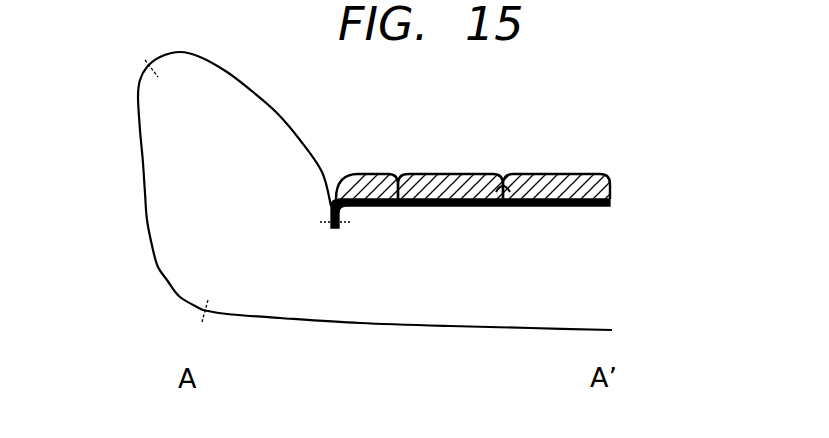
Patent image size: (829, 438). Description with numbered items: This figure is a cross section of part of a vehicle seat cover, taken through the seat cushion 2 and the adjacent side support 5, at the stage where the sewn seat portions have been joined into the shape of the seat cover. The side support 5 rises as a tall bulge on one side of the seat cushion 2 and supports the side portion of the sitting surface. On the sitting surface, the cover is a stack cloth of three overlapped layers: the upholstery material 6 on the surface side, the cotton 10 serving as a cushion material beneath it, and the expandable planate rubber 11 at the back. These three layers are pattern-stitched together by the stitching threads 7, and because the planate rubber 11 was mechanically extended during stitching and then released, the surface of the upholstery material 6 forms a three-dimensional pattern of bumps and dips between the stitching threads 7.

The seat cushion 2 is at (563, 282).
The side support 5 is at (175, 167).
The upholstery material 6 is at (561, 173).
The stitching thread 7 is at (503, 183).
The cotton 10 is at (588, 190).
The planate rubber 11 is at (461, 204).